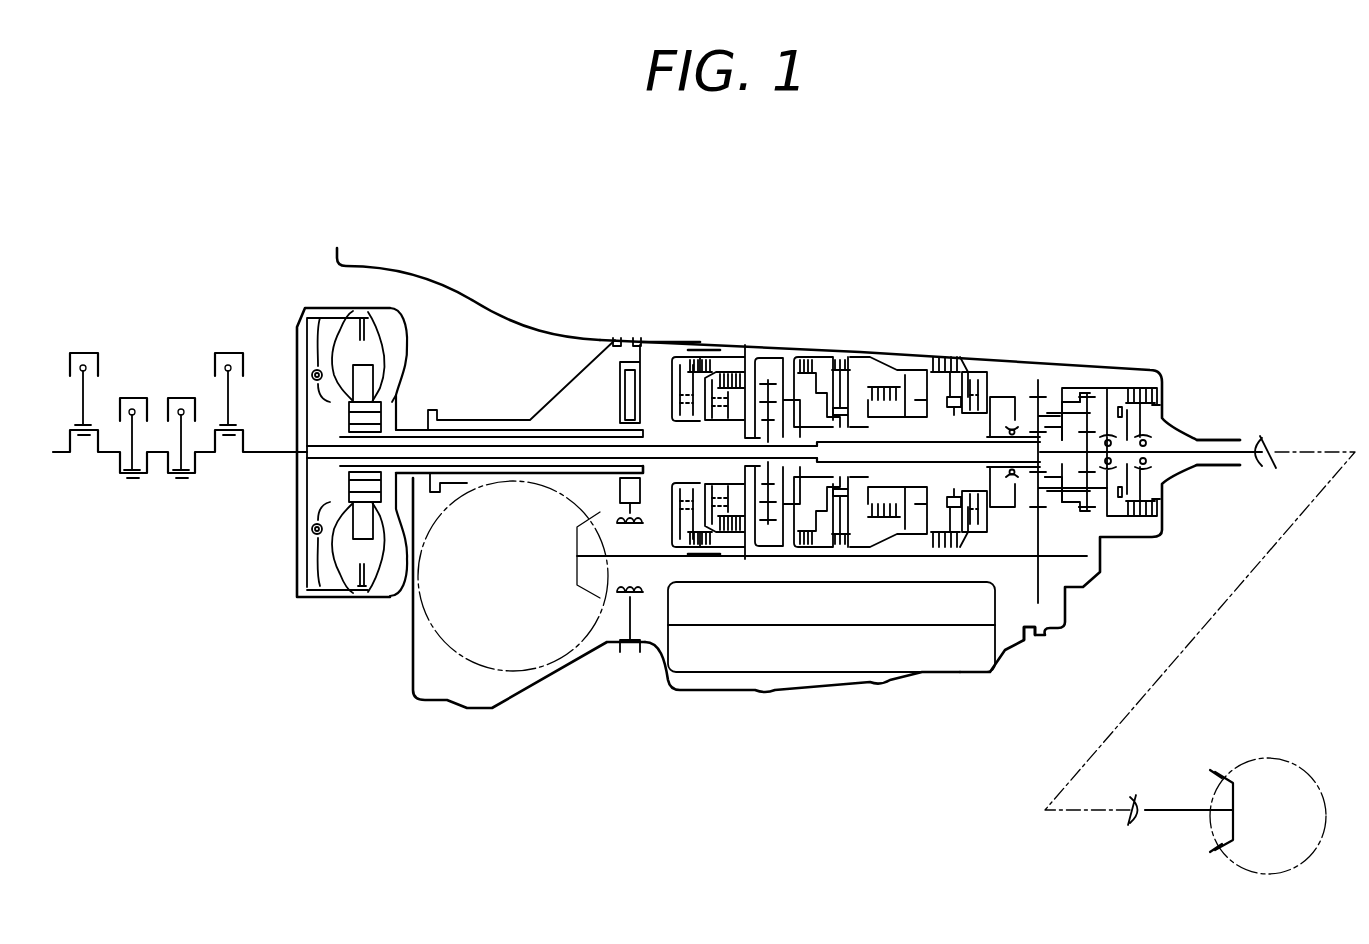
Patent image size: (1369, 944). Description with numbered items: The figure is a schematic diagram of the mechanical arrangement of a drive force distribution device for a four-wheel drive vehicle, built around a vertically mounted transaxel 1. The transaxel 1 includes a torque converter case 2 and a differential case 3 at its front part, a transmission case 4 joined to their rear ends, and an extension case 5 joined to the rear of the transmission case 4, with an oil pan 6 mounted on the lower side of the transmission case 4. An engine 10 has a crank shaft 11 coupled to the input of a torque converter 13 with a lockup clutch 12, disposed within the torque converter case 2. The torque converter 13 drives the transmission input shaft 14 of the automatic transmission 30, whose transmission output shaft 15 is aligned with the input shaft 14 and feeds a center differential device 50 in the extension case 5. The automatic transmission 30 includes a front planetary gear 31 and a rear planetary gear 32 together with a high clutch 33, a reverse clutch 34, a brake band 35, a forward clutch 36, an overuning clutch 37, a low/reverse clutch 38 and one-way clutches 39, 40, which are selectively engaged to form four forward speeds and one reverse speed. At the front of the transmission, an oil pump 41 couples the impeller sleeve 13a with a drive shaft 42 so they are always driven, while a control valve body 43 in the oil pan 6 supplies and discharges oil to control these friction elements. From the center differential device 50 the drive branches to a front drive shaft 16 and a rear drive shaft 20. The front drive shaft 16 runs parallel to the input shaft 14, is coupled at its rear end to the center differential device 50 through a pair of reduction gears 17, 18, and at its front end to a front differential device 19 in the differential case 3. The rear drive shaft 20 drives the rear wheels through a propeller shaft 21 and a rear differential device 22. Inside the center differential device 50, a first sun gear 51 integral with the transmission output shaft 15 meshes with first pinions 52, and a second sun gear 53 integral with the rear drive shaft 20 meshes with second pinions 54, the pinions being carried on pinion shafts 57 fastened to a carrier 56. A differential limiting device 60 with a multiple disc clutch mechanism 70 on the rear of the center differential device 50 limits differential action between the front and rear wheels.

The transaxel 1 is at (636, 228).
The torque converter case 2 is at (462, 298).
The differential case 3 is at (497, 710).
The transmission case 4 is at (657, 338).
The extension case 5 is at (1081, 394).
The oil pan 6 is at (900, 690).
The engine 10 is at (155, 370).
The crank shaft 11 is at (256, 456).
The lockup clutch 12 is at (308, 362).
The torque converter 13 is at (400, 337).
The impeller sleeve 13a is at (398, 400).
The transmission input shaft 14 is at (482, 442).
The transmission output shaft 15 is at (994, 436).
The front drive shaft 16 is at (838, 559).
The reduction gear 17 is at (1036, 394).
The reduction gear 18 is at (1040, 608).
The front differential device 19 is at (542, 668).
The rear drive shaft 20 is at (1216, 445).
The propeller shaft 21 is at (1312, 446).
The rear differential device 22 is at (1280, 755).
The automatic transmission 30 is at (847, 310).
The front planetary gear 31 is at (762, 484).
The rear planetary gear 32 is at (800, 482).
The high clutch 33 is at (735, 372).
The reverse clutch 34 is at (706, 362).
The brake band 35 is at (697, 348).
The forward clutch 36 is at (807, 356).
The overuning clutch 37 is at (847, 406).
The low/reverse clutch 38 is at (947, 356).
The one-way clutch 39 is at (957, 394).
The one-way clutch 40 is at (858, 392).
The oil pump 41 is at (632, 358).
The drive shaft 42 is at (520, 427).
The control valve body 43 is at (762, 660).
The center differential device 50 is at (1082, 381).
The first sun gear 51 is at (1060, 480).
The first pinion 52 is at (1082, 397).
The second sun gear 53 is at (1100, 490).
The second pinion 54 is at (1088, 388).
The carrier 56 is at (1086, 494).
The pinion shaft 57 is at (1043, 406).
The differential limiting device 60 is at (1150, 378).
The multiple disc clutch mechanism 70 is at (1163, 400).